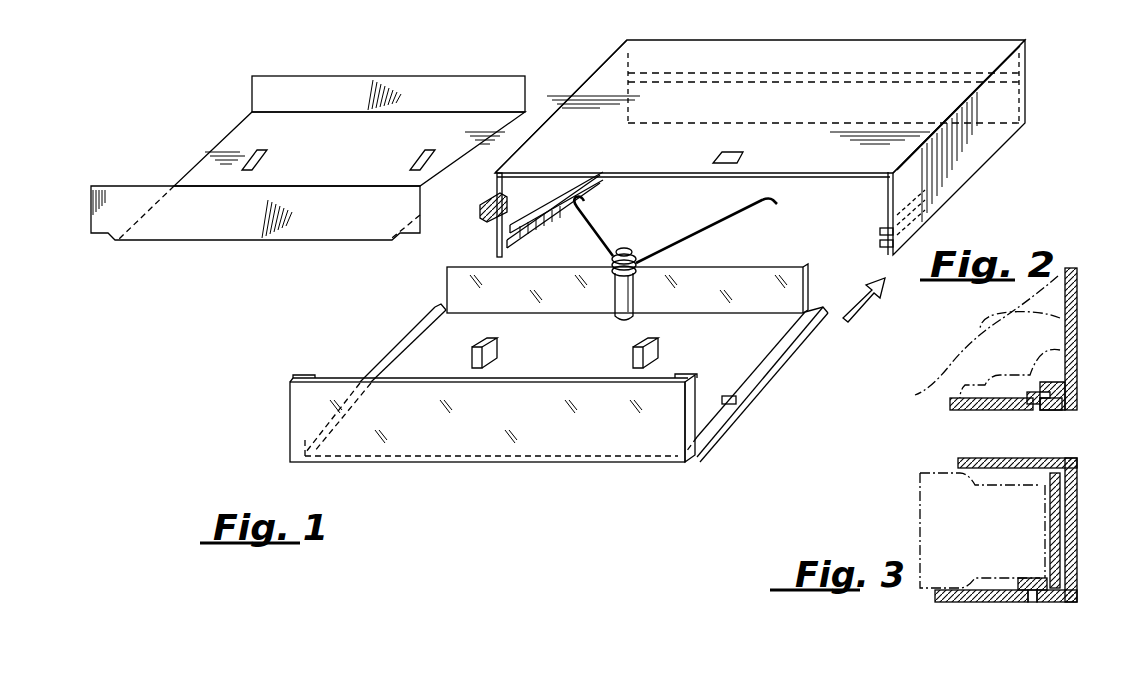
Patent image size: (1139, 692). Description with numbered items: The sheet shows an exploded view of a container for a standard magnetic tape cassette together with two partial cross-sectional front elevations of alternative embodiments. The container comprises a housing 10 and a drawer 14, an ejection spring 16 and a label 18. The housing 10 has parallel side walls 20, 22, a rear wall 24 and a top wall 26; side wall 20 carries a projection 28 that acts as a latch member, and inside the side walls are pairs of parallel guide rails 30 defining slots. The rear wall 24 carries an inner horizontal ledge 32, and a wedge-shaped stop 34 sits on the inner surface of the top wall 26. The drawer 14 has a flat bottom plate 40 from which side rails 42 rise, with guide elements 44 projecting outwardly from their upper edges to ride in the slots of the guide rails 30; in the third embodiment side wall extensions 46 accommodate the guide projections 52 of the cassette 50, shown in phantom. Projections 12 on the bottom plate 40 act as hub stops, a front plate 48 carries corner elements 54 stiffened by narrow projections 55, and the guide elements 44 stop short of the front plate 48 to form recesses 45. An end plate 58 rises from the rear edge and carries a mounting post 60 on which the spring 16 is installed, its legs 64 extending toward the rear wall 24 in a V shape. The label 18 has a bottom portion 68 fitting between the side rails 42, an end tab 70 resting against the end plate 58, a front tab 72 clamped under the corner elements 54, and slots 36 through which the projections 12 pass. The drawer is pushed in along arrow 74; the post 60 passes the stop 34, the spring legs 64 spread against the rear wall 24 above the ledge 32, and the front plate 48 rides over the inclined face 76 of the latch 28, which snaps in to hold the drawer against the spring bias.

In FIG. 1, the housing 10 is at (749, 133).
In FIG. 1, the projections 12 is at (472, 352).
In FIG. 1, the drawer 14 is at (540, 364).
In FIG. 1, the ejection spring 16 is at (676, 237).
In FIG. 1, the label 18 is at (308, 152).
In FIG. 1, the side wall 20 is at (495, 242).
In FIG. 1, the side wall 22 is at (968, 165).
In FIG. 2, the side wall 22 is at (1078, 318).
In FIG. 1, the rear wall 24 is at (1000, 88).
In FIG. 1, the top wall 26 is at (606, 76).
In FIG. 1, the projection / latch member 28 is at (477, 207).
In FIG. 1, the guide rails 30 is at (538, 222).
In FIG. 2, the guide rails 30 is at (1058, 406).
In FIG. 3, the guide rails 30 is at (1065, 600).
In FIG. 1, the horizontal ledge 32 is at (758, 76).
In FIG. 1, the wedge-shaped stop 34 is at (715, 160).
In FIG. 1, the slots 36 is at (267, 155).
In FIG. 1, the bottom plate 40 is at (762, 384).
In FIG. 2, the bottom plate 40 is at (986, 410).
In FIG. 3, the bottom plate 40 is at (955, 604).
In FIG. 1, the side rails 42 is at (395, 360).
In FIG. 2, the side rails 42 is at (1030, 392).
In FIG. 3, the side rails 42 is at (1020, 584).
In FIG. 1, the guide elements 44 is at (785, 336).
In FIG. 2, the guide elements 44 is at (1050, 388).
In FIG. 3, the guide elements 44 is at (1040, 582).
In FIG. 1, the recesses 45 is at (338, 405).
In FIG. 3, the side wall extensions 46 is at (1050, 508).
In FIG. 1, the front plate 48 is at (562, 435).
In FIG. 2, the magnetic tape cassette 50 is at (982, 342).
In FIG. 3, the magnetic tape cassette 50 is at (925, 498).
In FIG. 2, the guide projections 52 is at (1012, 312).
In FIG. 3, the guide projections 52 is at (1045, 528).
In FIG. 1, the corner elements 54 is at (305, 375).
In FIG. 1, the narrow projections 55 is at (692, 448).
In FIG. 1, the end plate 58 is at (790, 272).
In FIG. 1, the mounting post 60 is at (619, 312).
In FIG. 1, the legs / end wires 64 is at (597, 208).
In FIG. 1, the bottom portion 68 is at (240, 140).
In FIG. 1, the end tab 70 is at (422, 86).
In FIG. 1, the front tab 72 is at (238, 228).
In FIG. 1, the arrow 74 is at (866, 306).
In FIG. 1, the inclined face 76 is at (498, 203).